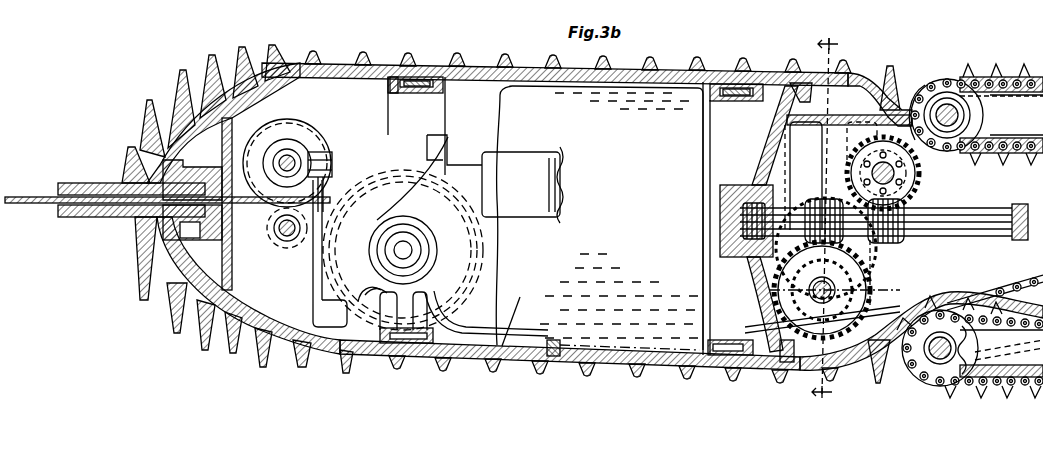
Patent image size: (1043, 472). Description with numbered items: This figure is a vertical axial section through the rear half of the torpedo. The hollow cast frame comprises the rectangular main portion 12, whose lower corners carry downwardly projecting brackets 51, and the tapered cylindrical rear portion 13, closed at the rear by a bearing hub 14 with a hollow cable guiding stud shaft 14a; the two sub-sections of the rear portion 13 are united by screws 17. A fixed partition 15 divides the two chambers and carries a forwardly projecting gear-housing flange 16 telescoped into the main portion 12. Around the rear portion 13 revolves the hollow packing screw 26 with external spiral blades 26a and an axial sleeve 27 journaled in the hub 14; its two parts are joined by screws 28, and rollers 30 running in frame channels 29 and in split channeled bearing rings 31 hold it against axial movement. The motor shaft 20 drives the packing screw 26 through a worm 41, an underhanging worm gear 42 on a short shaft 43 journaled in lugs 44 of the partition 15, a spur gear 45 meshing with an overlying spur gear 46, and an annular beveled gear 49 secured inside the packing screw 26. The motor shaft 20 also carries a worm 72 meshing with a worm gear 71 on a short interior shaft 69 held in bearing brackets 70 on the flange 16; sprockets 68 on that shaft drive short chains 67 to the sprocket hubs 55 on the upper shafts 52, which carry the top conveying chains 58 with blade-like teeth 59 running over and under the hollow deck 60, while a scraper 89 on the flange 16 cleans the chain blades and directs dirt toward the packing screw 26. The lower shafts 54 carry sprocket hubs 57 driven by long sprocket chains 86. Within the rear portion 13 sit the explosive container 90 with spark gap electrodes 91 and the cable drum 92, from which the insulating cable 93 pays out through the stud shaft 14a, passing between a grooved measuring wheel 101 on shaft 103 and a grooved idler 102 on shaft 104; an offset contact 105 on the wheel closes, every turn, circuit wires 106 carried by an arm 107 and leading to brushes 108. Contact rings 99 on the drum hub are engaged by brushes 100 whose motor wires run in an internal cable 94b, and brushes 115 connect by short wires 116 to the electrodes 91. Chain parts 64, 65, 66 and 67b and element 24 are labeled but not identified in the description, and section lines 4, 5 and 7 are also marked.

The main portion of the hollow body frame 12 is at (1005, 154).
The rear portion of the frame 13 is at (222, 143).
The bearing hub 14 is at (196, 240).
The hollow cable guiding stud shaft 14a is at (58, 216).
The fixed partition 15 is at (770, 150).
The gear-housing annular flange 16 is at (838, 115).
The screws 17 is at (547, 342).
The motor shaft 20 is at (1000, 236).
The packing screw 26 is at (292, 64).
The conveying and packing threads or spiral blades 26a is at (182, 90).
The axial sleeve 27 is at (105, 219).
The screws 28 is at (553, 356).
The roller bearing channels 29 is at (388, 92).
The rollers 30 is at (420, 79).
The channeled bearing rings 31 is at (402, 76).
The worm 41 is at (865, 240).
The worm gear 42 is at (871, 270).
The short shaft 43 is at (808, 292).
The lugs 44 is at (752, 292).
The spur gear 45 is at (876, 308).
The spur gear 46 is at (800, 192).
The annular beveled gear 49 is at (808, 82).
The section line 5- 5 is at (830, 222).
The upper horizontal shafts 52 is at (946, 103).
The lower horizontal shafts 54 is at (928, 358).
The sprocket hubs 55 is at (955, 104).
The top chains 58 is at (1032, 77).
The blade-like teeth 59 is at (1000, 72).
The horizontal deck 60 is at (992, 115).
The cutter tooth 64 is at (1006, 392).
The chain link 65 is at (974, 388).
The lower guide bar 66 is at (1008, 360).
The short sprocket chains 67 is at (940, 160).
The chain roller 67b is at (940, 388).
The sprockets 68 is at (912, 180).
The short interior shaft 69 is at (876, 152).
The bearing brackets 70 is at (827, 148).
The worm gear 71 is at (905, 192).
The worm 72 is at (902, 240).
The driving sprocket chains 86 is at (1008, 288).
The scraper 89 is at (916, 88).
The container 90 is at (607, 218).
The spark gap electrodes 91 is at (564, 193).
The cable spool or drum 92 is at (498, 265).
The insulating cable 93 is at (22, 196).
The insulated cable 94b is at (492, 335).
The contact rings 99 is at (426, 260).
The contact brushes 100 is at (432, 268).
The grooved measuring wheel 101 is at (318, 138).
The grooved idler 102 is at (284, 242).
The shaft 103 is at (287, 155).
The shaft 104 is at (280, 235).
The offset circuit closing contact 105 is at (332, 158).
The circuit wires 106 is at (313, 309).
The arm 107 is at (324, 190).
The brushes 108 is at (378, 290).
The contact brushes 115 is at (415, 185).
The short insulated wires 116 is at (527, 160).
The section line 4- 4 is at (186, 2).
The section line 7- 7 is at (745, 5).
The element 24 is at (454, 6).
The brackets 51 is at (401, 5).
The sprocket hubs 57 is at (350, 6).